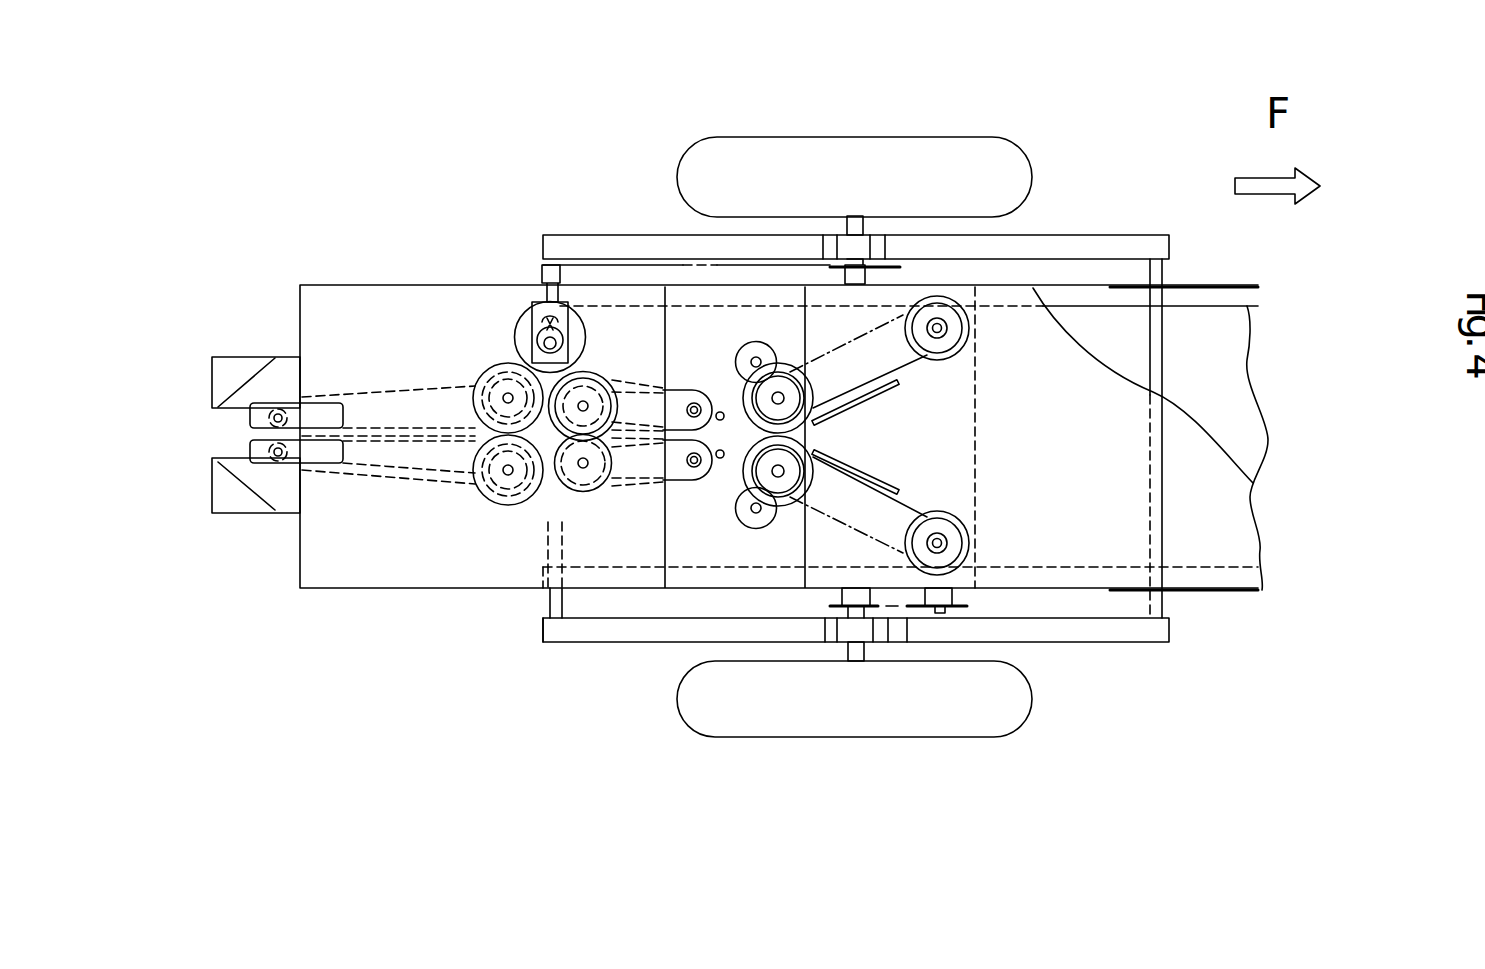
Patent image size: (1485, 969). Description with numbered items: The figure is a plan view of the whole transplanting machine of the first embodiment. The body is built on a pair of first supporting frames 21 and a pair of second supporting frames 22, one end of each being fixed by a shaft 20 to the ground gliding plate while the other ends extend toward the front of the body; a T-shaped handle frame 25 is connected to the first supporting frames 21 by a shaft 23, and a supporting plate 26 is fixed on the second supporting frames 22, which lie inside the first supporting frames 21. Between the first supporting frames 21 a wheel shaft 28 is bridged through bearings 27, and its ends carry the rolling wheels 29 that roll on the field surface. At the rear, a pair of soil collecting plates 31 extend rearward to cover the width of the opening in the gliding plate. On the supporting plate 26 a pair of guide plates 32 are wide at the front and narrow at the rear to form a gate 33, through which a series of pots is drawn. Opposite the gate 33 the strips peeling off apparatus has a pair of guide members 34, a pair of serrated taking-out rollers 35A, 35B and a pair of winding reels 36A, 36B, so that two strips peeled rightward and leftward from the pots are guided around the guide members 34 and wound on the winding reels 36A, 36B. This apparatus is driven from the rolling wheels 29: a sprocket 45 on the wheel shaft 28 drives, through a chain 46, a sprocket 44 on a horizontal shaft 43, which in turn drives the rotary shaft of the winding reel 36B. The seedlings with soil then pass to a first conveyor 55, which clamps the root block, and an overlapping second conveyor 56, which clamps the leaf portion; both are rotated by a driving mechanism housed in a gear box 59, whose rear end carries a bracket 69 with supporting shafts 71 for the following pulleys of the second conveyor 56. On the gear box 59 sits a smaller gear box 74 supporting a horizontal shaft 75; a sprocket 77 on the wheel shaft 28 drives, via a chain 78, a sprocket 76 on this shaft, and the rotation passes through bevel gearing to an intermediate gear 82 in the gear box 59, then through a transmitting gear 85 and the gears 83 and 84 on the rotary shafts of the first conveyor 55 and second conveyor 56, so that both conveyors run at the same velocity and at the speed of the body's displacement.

The shaft 20 is at (552, 642).
The first supporting frames 21 is at (1098, 236).
The second supporting frames 22 is at (1243, 297).
The shaft 23 is at (1153, 368).
The handle frame 25 is at (1224, 286).
The supporting plate 26 is at (1237, 527).
The bearings 27 is at (843, 243).
The wheel shaft 28 is at (852, 223).
The rolling wheels 29 is at (975, 157).
The soil collecting plates 31 is at (220, 462).
The guide plates 32 is at (887, 483).
The gate 33 is at (812, 437).
The guide members 34 is at (722, 412).
The taking-out roller 35A is at (748, 337).
The taking-out roller 35B is at (743, 528).
The winding reel 36A is at (958, 294).
The winding reel 36B is at (977, 568).
The horizontal shaft 43 is at (950, 608).
The sprocket 44 is at (963, 607).
The sprocket 45 is at (830, 607).
The chain 46 is at (907, 642).
The first conveyor 55 is at (630, 484).
The second conveyor 56 is at (368, 392).
The gear box 59 is at (322, 572).
The bracket 69 is at (297, 453).
The supporting shafts 71 is at (277, 458).
The smaller gear box 74 is at (535, 320).
The horizontal shaft 75 is at (543, 297).
The sprocket 76 is at (547, 298).
The sprocket 77 is at (892, 265).
The chain 78 is at (762, 265).
The intermediate gear 82 is at (515, 350).
The gears 83 is at (475, 488).
The gears 84 is at (520, 460).
The transmitting gear 85 is at (592, 371).